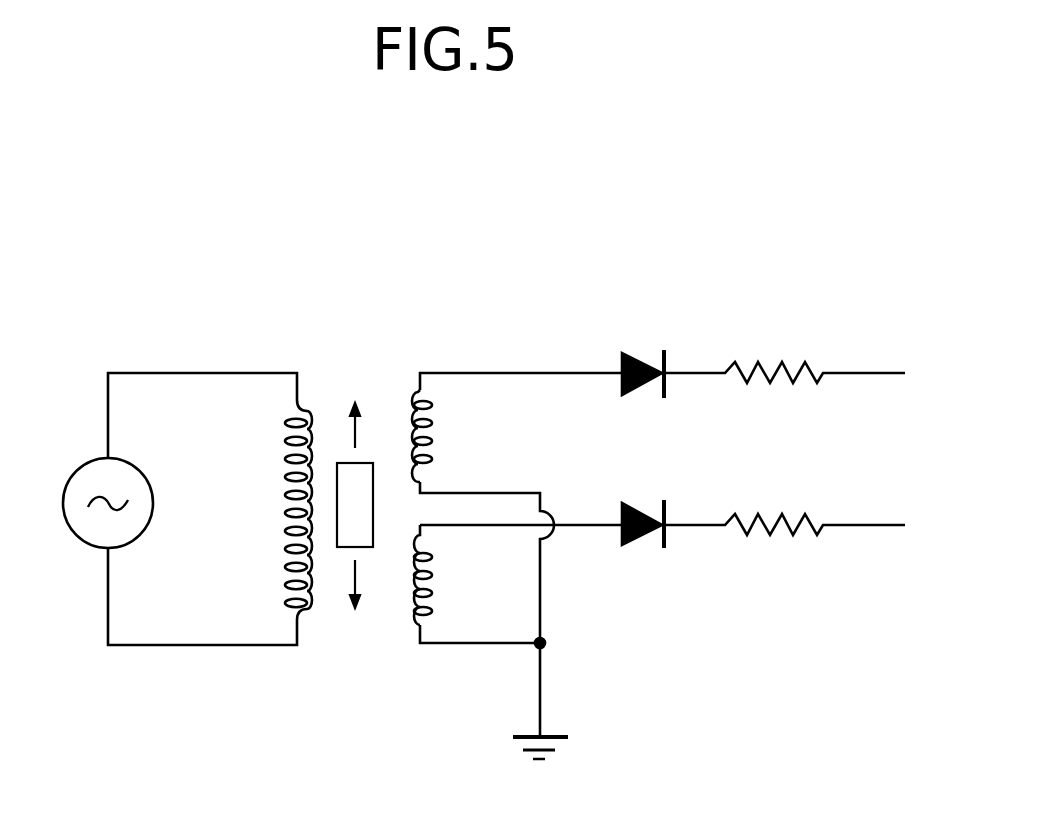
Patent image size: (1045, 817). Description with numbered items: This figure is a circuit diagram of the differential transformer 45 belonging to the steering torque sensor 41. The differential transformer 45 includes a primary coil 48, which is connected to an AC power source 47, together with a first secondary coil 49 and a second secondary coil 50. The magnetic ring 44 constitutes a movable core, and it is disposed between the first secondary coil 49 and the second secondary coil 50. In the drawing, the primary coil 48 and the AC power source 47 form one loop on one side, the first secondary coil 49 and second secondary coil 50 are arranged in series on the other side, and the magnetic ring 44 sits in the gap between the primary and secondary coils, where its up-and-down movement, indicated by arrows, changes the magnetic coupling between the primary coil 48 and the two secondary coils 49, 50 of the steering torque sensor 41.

The steering torque sensor 41 is at (552, 286).
The magnetic ring 44 is at (343, 533).
The differential transformer 45 is at (355, 369).
The AC power source 47 is at (150, 495).
The primary coil 48 is at (286, 493).
The first secondary coil 49 is at (425, 452).
The second secondary coil 50 is at (425, 590).